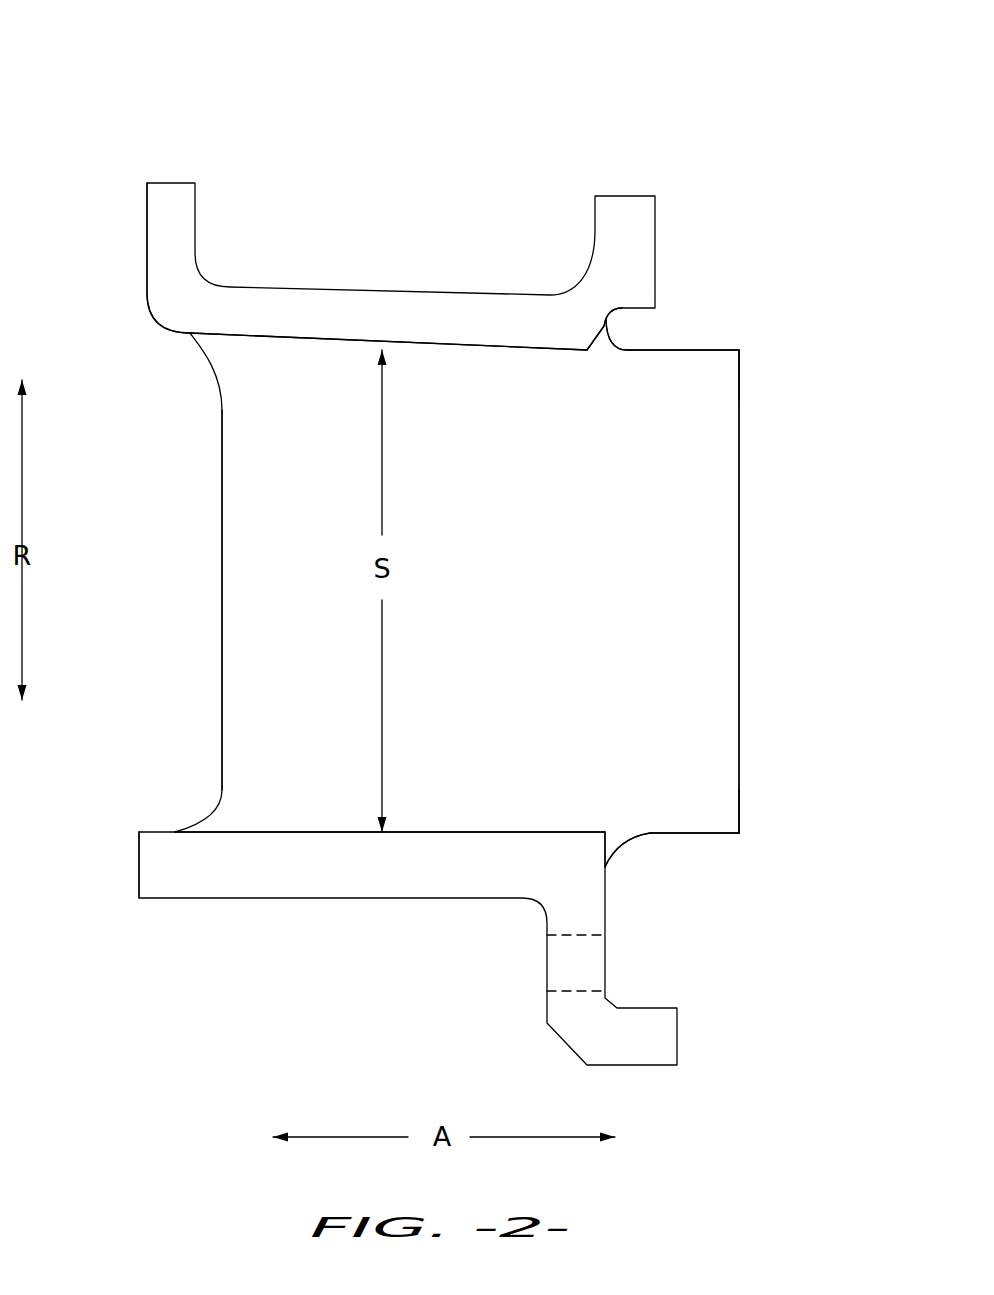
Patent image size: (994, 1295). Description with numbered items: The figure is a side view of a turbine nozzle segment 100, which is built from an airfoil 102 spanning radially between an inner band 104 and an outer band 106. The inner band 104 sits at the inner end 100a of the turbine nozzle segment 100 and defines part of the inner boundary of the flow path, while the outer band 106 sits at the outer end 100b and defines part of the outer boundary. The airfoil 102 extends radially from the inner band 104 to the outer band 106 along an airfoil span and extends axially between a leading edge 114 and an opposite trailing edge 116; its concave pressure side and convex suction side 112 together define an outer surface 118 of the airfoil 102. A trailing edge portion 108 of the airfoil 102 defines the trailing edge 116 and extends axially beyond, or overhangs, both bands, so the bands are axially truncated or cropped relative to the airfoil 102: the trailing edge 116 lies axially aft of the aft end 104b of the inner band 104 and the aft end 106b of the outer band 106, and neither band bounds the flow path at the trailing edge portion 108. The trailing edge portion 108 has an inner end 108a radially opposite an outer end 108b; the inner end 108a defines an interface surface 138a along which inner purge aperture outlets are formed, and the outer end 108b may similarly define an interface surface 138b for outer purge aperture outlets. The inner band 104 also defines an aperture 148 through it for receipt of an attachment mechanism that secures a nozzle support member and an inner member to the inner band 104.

The turbine nozzle segment 100 is at (170, 100).
The inner end 100a is at (115, 885).
The outer end 100b is at (142, 318).
The airfoil 102 is at (242, 588).
The inner band 104 is at (438, 875).
The aft end of the inner band 104b is at (618, 832).
The outer band 106 is at (273, 312).
The aft end of the outer band 106b is at (598, 348).
The trailing edge portion 108 is at (683, 293).
The inner end of the trailing edge portion 108a is at (760, 835).
The outer end of the trailing edge portion 108b is at (760, 352).
The suction side 112 is at (483, 418).
The leading edge 114 is at (222, 690).
The trailing edge 116 is at (742, 568).
The outer surface 118 is at (297, 785).
The interface surface 138a is at (677, 840).
The interface surface 138b is at (702, 347).
The aperture 148 is at (560, 965).